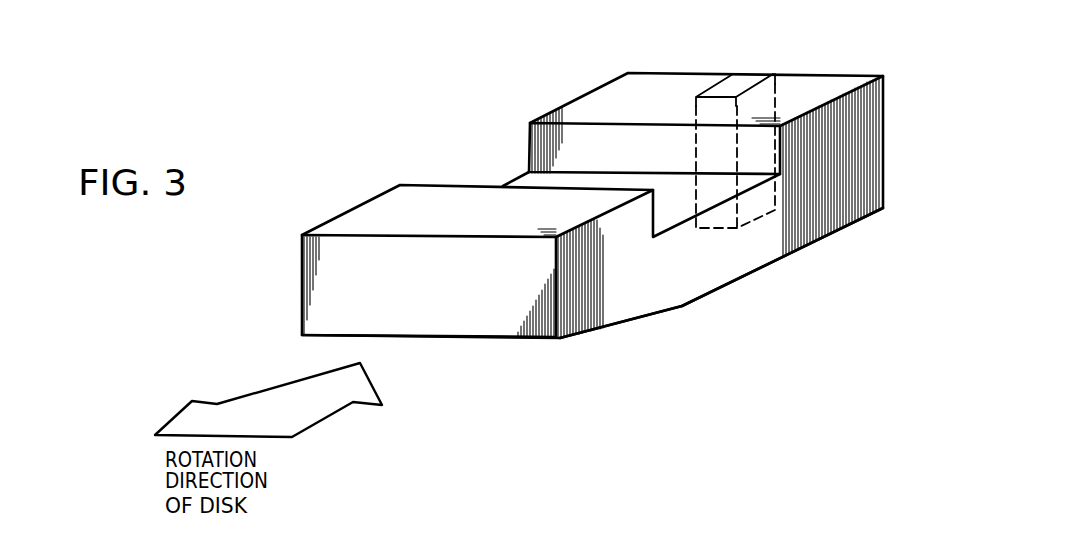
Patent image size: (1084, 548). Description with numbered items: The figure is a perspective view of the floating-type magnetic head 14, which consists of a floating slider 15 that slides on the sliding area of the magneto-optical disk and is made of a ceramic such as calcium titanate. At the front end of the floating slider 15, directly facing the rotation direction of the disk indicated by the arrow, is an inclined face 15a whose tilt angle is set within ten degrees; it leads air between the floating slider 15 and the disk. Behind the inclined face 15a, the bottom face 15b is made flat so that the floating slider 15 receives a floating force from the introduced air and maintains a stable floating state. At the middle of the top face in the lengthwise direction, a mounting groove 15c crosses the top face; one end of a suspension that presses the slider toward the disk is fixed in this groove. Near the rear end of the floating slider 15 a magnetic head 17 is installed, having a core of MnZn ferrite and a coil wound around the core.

The floating-type magnetic head 14 is at (471, 338).
The floating slider 15 is at (847, 173).
The inclined face 15a is at (621, 323).
The bottom face 15b is at (793, 256).
The mounting groove 15c is at (513, 185).
The magnetic head 17 is at (747, 79).